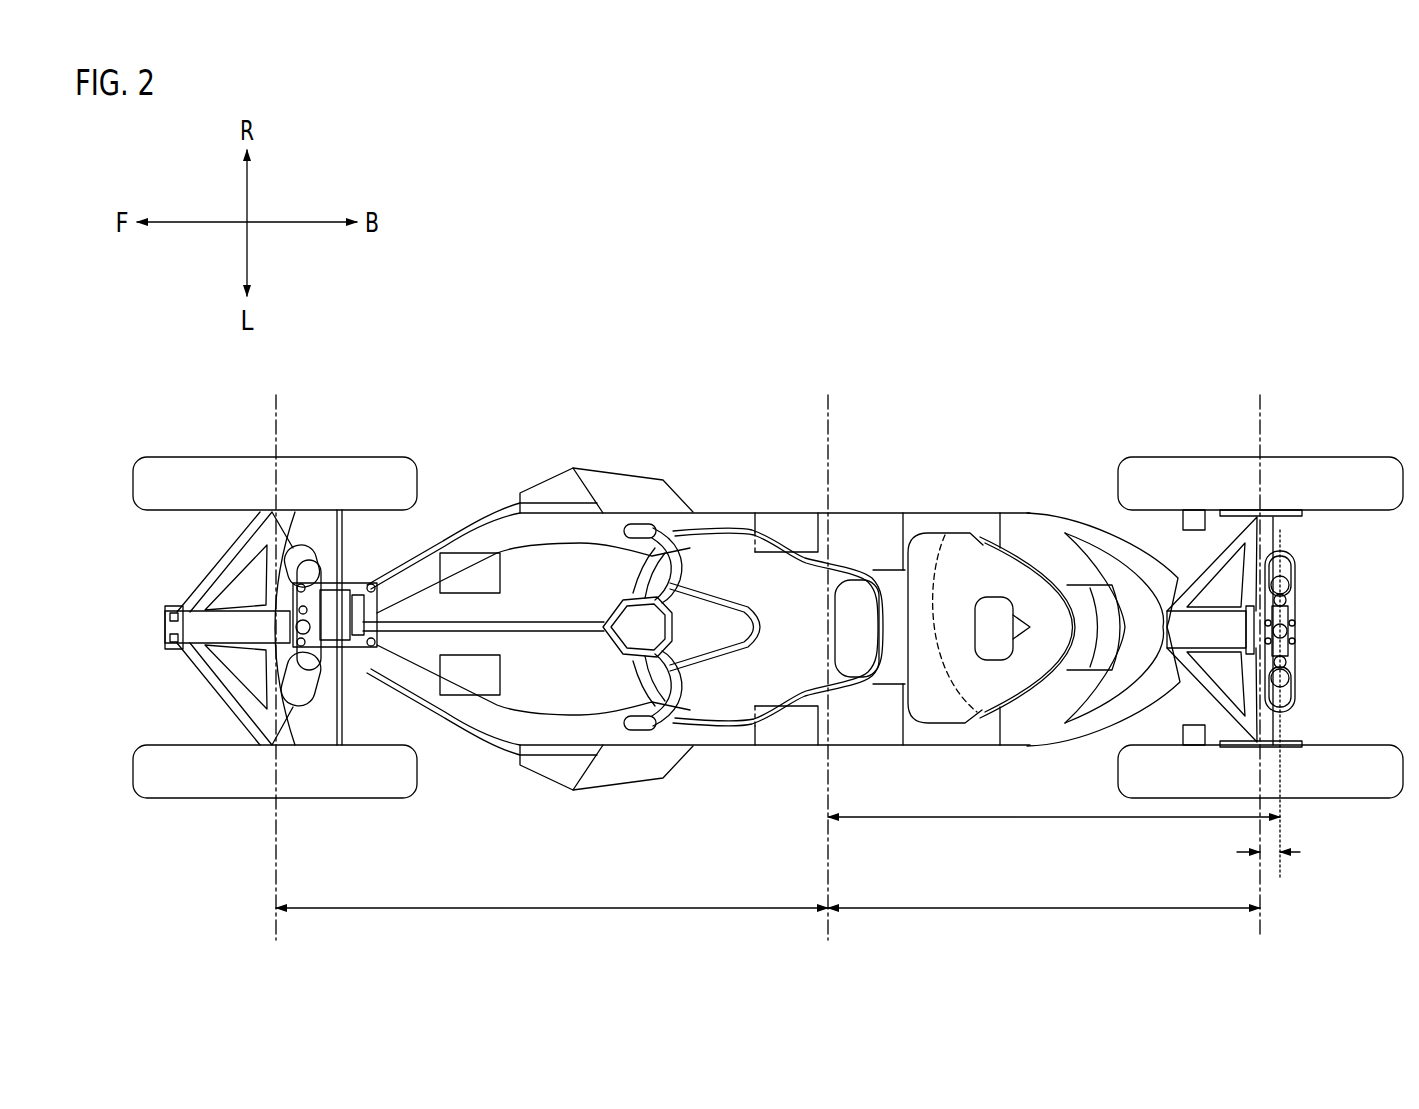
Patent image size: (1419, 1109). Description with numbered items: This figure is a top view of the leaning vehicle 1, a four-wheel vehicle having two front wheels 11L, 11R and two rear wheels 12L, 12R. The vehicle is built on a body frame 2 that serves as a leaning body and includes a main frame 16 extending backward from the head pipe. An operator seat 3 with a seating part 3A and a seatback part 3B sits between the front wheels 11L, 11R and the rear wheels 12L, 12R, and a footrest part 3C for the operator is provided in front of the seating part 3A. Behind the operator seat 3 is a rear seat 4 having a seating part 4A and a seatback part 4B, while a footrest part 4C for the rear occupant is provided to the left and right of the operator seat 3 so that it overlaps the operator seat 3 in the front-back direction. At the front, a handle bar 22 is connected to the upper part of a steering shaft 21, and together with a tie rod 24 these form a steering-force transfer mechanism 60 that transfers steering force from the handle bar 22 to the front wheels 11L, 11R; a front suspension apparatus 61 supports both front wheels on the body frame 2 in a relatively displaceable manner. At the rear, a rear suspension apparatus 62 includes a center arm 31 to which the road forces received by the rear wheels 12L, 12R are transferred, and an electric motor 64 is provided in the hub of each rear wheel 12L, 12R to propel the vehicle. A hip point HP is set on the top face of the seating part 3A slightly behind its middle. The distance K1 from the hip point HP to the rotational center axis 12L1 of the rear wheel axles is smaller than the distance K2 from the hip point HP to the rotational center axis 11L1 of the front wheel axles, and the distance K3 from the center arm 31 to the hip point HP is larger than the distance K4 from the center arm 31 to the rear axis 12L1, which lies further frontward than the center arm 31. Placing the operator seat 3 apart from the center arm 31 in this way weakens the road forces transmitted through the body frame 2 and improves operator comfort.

The leaning vehicle 1 is at (889, 282).
The body frame 2 is at (482, 540).
The operator seat 3 is at (838, 580).
The seating part 3A is at (742, 567).
The seatback part 3B is at (912, 543).
The footrest part 3C is at (455, 553).
The rear seat 4 is at (1018, 543).
The seating part 4A is at (950, 530).
The seatback part 4B is at (1110, 617).
The footrest part 4C is at (808, 522).
The right front wheel 11R is at (190, 460).
The left front wheel 11L is at (165, 798).
The rotational center axis 11L1 is at (278, 822).
The right rear wheel 12R is at (1300, 520).
The left rear wheel 12L is at (1405, 802).
The rotational center axis 12L1 is at (1262, 932).
The main frame 16 is at (575, 747).
The steering shaft 21 is at (530, 634).
The handle bar 22 is at (655, 527).
The tie rod 24 is at (342, 520).
The center arm 31 is at (1295, 637).
The steering-force transfer mechanism 60 is at (260, 566).
The front suspension apparatus 61 is at (208, 612).
The rear suspension apparatus 62 is at (1342, 631).
The electric motor 64 is at (1292, 520).
The hip point HP is at (847, 667).
The distance K1 is at (1044, 928).
The distance K2 is at (552, 928).
The distance K3 is at (1054, 834).
The distance K4 is at (1265, 855).